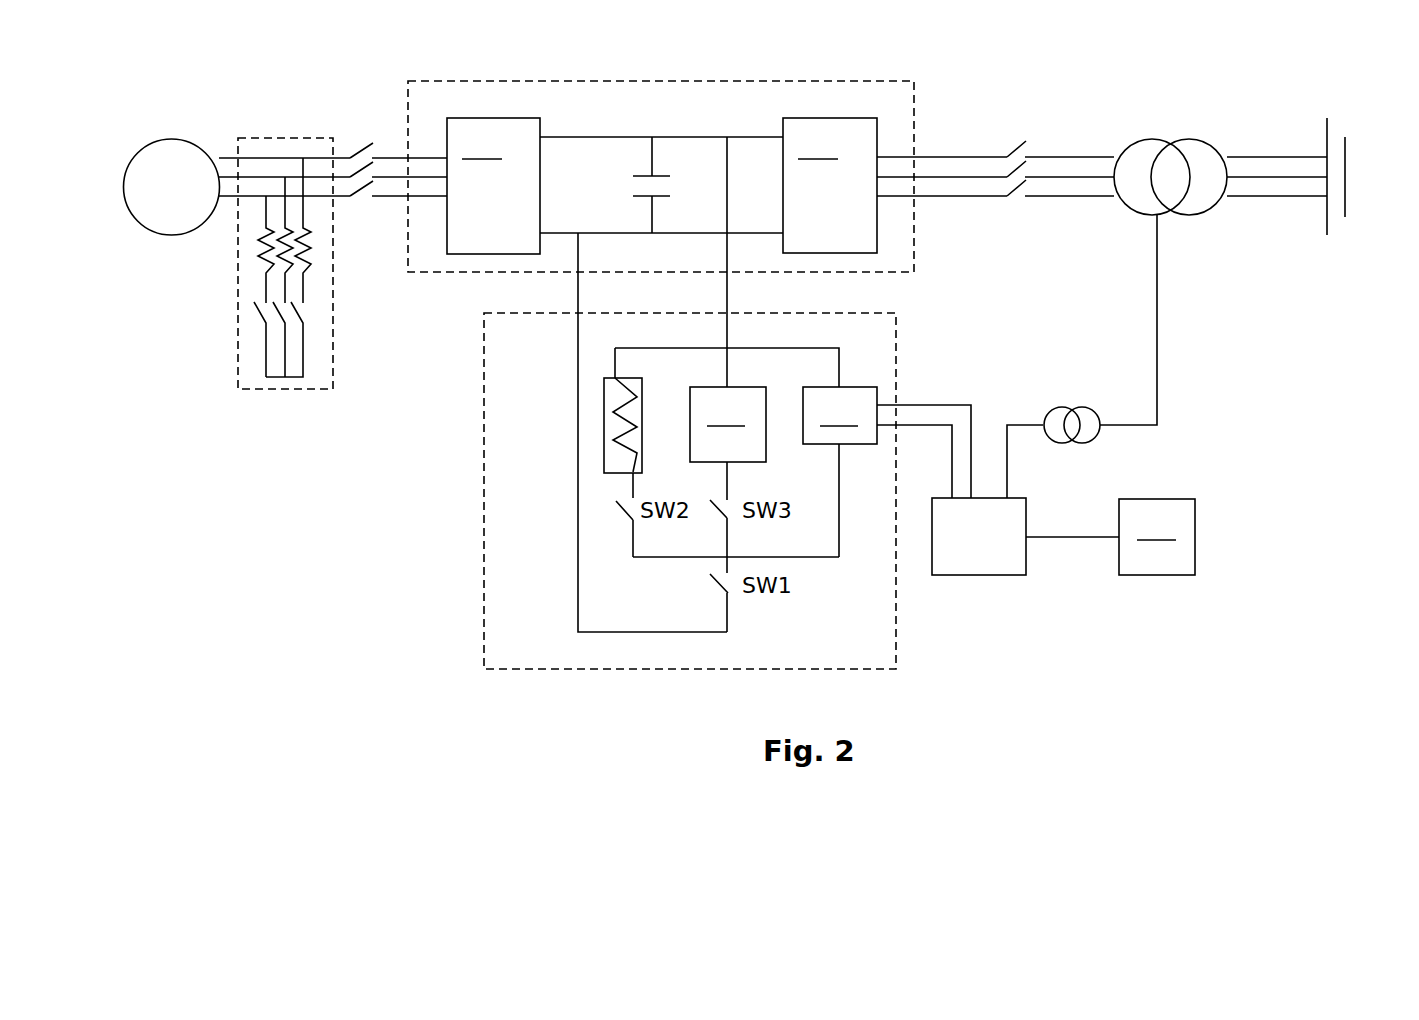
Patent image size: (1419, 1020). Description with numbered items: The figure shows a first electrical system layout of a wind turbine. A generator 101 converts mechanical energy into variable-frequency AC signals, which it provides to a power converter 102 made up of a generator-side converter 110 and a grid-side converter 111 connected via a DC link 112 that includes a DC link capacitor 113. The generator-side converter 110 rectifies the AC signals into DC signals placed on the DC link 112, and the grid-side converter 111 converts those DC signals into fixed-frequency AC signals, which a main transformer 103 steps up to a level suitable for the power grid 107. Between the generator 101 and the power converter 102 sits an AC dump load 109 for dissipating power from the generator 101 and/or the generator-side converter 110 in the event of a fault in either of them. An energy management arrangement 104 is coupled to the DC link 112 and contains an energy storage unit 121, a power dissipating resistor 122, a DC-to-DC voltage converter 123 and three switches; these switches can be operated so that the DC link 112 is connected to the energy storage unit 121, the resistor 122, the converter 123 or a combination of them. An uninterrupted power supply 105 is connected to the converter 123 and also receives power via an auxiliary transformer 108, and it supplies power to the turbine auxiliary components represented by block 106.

The generator 101 is at (164, 138).
The power converter 102 is at (917, 118).
The main transformer 103 is at (1183, 138).
The energy management arrangement 104 is at (483, 443).
The uninterrupted power supply (UPS) 105 is at (978, 575).
The turbine auxiliary components 106 is at (1157, 537).
The power grid 107 is at (1347, 157).
The auxiliary transformer 108 is at (1063, 405).
The AC dump load 109 is at (298, 138).
The generator-side converter 110 is at (493, 186).
The grid-side converter 111 is at (830, 185).
The DC link 112 is at (560, 137).
The DC link capacitor 113 is at (650, 213).
The energy storage unit 121 is at (728, 424).
The power dissipating resistor 122 is at (643, 427).
The DC-to-DC voltage converter 123 is at (840, 415).